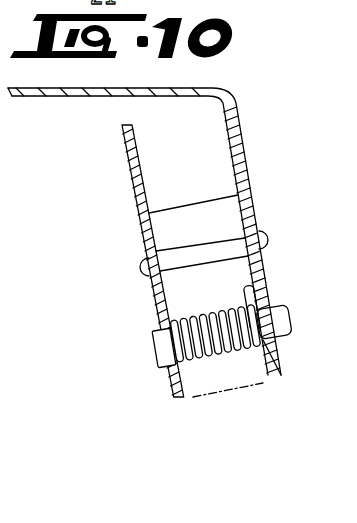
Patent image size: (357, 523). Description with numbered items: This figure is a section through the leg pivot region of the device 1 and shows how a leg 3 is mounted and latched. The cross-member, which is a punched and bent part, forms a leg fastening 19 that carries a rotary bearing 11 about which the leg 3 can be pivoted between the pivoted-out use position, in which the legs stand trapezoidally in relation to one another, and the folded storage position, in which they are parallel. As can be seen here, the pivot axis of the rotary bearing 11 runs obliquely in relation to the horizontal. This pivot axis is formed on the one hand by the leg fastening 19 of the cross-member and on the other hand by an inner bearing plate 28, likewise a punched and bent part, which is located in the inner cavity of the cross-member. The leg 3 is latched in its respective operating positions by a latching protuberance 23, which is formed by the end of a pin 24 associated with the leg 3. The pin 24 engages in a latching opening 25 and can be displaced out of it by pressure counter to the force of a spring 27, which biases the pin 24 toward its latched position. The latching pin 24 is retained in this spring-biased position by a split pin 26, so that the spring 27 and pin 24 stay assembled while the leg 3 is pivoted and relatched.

The leg fastening 19 is at (238, 116).
The inner bearing plate 28 is at (129, 178).
The leg 3 is at (210, 221).
The rotary bearing 11 is at (138, 265).
The latching opening 25 is at (266, 293).
The latching protuberance 23 is at (282, 323).
The pin 24 is at (275, 338).
The spring 27 is at (198, 363).
The split pin 26 is at (265, 357).
The device 1 is at (351, 108).